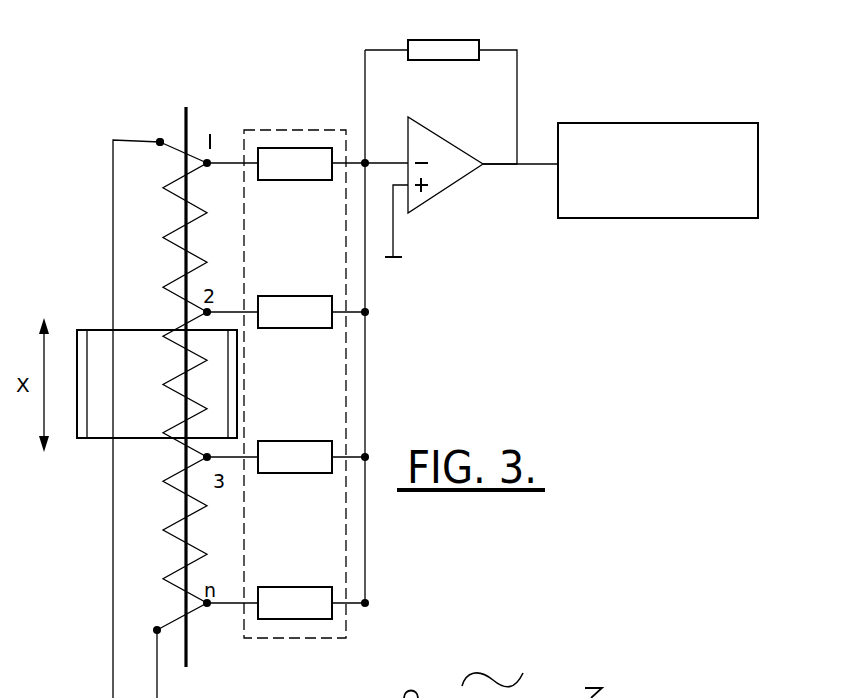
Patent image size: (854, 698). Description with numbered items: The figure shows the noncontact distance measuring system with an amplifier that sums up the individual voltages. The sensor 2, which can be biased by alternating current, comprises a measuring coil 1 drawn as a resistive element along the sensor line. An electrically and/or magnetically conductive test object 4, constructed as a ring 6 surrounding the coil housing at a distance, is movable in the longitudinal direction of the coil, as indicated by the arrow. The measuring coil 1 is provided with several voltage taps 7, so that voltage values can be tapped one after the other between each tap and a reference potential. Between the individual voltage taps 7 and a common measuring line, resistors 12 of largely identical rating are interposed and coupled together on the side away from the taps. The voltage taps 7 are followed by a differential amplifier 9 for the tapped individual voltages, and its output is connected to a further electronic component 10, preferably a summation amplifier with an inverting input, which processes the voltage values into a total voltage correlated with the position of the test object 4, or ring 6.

The measuring coil 1 is at (160, 140).
The sensor 2 is at (180, 78).
The test object 4 is at (77, 344).
The ring 6 is at (157, 384).
The voltage taps 7 is at (210, 166).
The differential amplifier 9 is at (437, 147).
The electronic component 10 is at (668, 204).
The resistors 12 is at (305, 638).